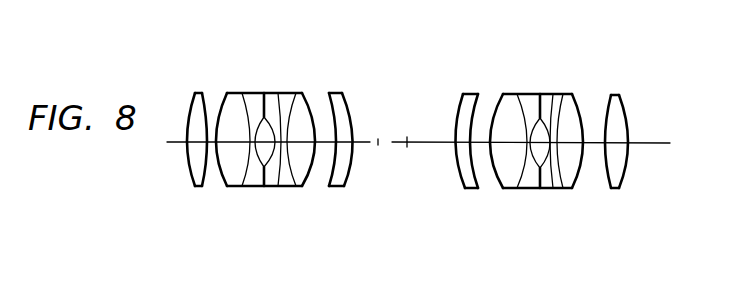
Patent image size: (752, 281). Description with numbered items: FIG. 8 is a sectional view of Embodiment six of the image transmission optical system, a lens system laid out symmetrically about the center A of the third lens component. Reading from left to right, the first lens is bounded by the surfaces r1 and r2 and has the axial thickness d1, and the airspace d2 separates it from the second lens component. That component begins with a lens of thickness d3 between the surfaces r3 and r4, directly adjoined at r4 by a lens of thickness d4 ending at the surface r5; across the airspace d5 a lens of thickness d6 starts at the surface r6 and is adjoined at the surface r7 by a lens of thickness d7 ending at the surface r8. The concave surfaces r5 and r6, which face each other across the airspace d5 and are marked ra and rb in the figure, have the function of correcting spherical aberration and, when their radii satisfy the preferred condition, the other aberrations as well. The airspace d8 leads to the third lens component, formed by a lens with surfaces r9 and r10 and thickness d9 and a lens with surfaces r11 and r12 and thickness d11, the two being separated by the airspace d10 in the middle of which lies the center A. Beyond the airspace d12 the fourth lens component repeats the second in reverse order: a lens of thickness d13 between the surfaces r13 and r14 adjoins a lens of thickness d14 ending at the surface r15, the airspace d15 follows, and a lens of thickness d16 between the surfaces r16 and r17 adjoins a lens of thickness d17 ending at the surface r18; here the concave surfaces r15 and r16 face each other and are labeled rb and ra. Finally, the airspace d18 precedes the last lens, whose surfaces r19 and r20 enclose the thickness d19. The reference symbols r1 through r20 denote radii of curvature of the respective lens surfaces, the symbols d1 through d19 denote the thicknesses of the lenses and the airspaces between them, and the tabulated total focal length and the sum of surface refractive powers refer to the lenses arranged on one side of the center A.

The radius of curvature of lens surface r1 is at (188, 100).
The radius of curvature of lens surface r2 is at (205, 95).
The radius of curvature of lens surface r3 is at (223, 95).
The radius of curvature of lens surface r4 is at (246, 95).
The radius of curvature of lens surface r5 is at (262, 112).
The radius of curvature of lens surface r6 is at (275, 97).
The radius of curvature of lens surface r7 is at (296, 97).
The radius of curvature of lens surface r8 is at (308, 95).
The radius of curvature of lens surface r9 is at (327, 95).
The radius of curvature of lens surface r10 is at (351, 107).
The radius of curvature of lens surface r11 is at (459, 105).
The radius of curvature of lens surface r12 is at (481, 98).
The radius of curvature of lens surface r13 is at (498, 97).
The radius of curvature of lens surface r14 is at (509, 100).
The radius of curvature of lens surface r15 is at (539, 114).
The radius of curvature of lens surface r16 is at (549, 100).
The radius of curvature of lens surface r17 is at (559, 97).
The radius of curvature of lens surface r18 is at (582, 108).
The radius of curvature of lens surface r19 is at (604, 105).
The radius of curvature of lens surface r20 is at (629, 107).
The lens thickness d1 is at (195, 155).
The airspace d2 is at (210, 158).
The lens thickness d3 is at (234, 158).
The lens thickness d4 is at (256, 158).
The airspace d5 is at (271, 158).
The lens thickness d6 is at (284, 158).
The lens thickness d7 is at (300, 158).
The airspace d8 is at (327, 158).
The lens thickness d9 is at (346, 158).
The airspace d10 is at (378, 145).
The lens thickness d11 is at (461, 158).
The airspace d12 is at (480, 158).
The lens thickness d13 is at (507, 158).
The lens thickness d14 is at (532, 158).
The airspace d15 is at (546, 158).
The lens thickness d16 is at (556, 158).
The lens thickness d17 is at (571, 158).
The airspace d18 is at (594, 158).
The lens thickness d19 is at (616, 158).
The center of third lens component A is at (406, 152).